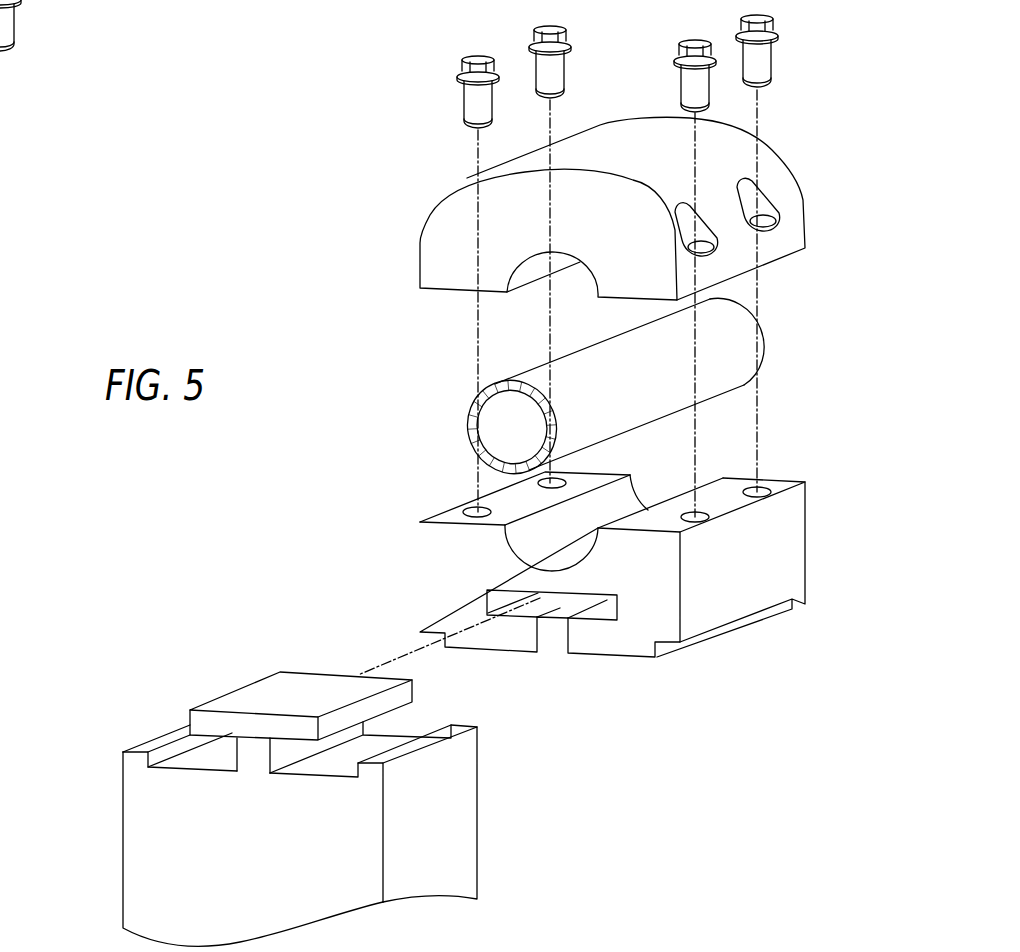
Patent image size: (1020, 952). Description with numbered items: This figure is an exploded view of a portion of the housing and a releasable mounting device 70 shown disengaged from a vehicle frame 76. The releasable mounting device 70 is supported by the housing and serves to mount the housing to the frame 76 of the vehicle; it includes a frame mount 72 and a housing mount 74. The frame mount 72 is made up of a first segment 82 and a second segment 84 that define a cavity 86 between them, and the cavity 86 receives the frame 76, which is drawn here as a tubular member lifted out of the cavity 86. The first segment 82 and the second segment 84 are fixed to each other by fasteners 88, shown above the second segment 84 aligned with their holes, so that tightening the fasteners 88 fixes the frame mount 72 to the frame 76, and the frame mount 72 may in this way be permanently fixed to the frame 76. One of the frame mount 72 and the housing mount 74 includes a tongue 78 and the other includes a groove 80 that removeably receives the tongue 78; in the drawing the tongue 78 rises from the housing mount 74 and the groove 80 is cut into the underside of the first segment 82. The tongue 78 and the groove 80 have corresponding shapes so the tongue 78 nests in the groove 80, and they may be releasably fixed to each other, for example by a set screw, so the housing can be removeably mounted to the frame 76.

The releasable mounting device 70 is at (543, 832).
The frame mount 72 is at (318, 304).
The housing mount 74 is at (112, 852).
The frame 76 is at (463, 433).
The tongue 78 is at (268, 693).
The groove 80 is at (607, 612).
The first segment 82 is at (810, 533).
The second segment 84 is at (808, 175).
The cavity 86 is at (672, 483).
The fasteners 88 is at (462, 67).